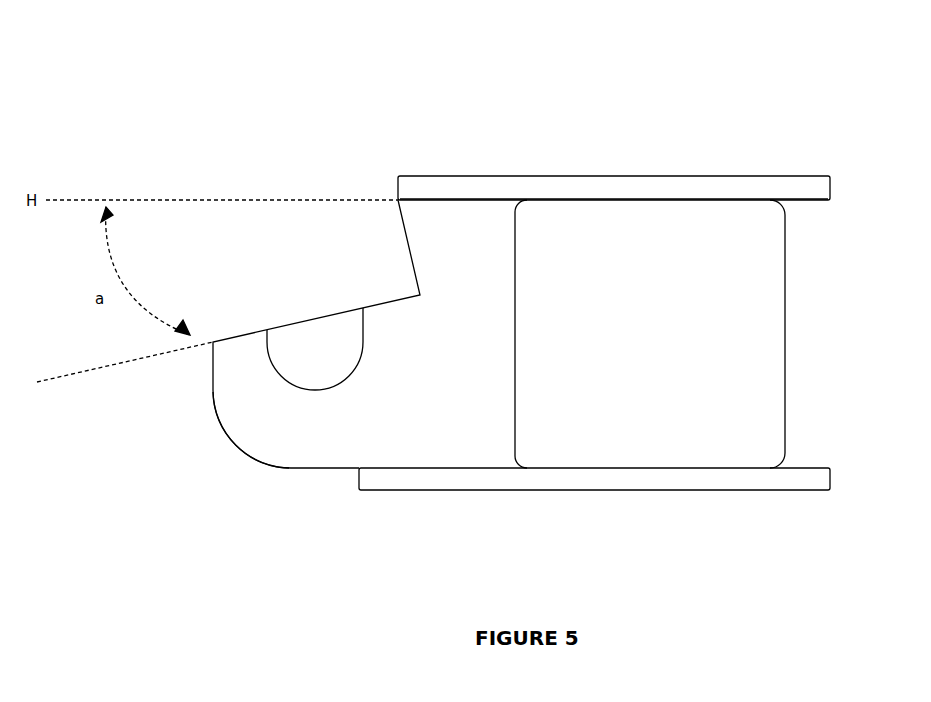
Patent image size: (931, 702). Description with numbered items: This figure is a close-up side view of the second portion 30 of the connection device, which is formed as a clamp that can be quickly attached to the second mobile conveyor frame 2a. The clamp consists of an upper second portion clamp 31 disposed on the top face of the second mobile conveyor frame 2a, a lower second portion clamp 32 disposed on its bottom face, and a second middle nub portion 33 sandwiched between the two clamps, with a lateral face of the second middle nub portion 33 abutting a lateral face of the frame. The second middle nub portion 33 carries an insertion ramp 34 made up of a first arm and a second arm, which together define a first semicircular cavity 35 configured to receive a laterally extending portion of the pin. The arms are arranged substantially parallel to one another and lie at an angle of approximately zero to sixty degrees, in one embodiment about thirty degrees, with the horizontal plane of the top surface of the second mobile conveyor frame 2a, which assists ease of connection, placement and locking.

The second portion of the connection device 30 is at (528, 157).
The upper second portion clamp 31 is at (742, 190).
The lower second portion clamp 32 is at (793, 480).
The second middle nub portion 33 is at (447, 386).
The insertion ramp 34 is at (242, 457).
The first semicircular cavity 35 is at (315, 355).
The second mobile conveyor frame 2a is at (677, 405).